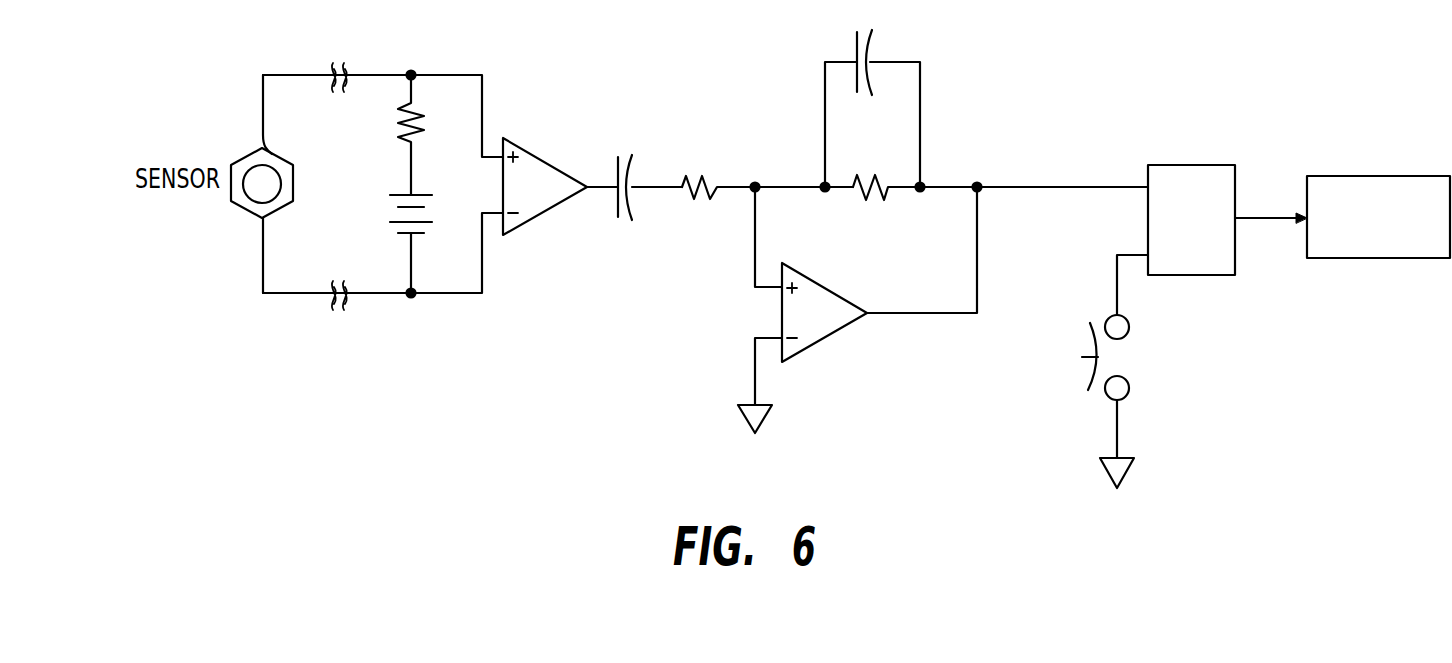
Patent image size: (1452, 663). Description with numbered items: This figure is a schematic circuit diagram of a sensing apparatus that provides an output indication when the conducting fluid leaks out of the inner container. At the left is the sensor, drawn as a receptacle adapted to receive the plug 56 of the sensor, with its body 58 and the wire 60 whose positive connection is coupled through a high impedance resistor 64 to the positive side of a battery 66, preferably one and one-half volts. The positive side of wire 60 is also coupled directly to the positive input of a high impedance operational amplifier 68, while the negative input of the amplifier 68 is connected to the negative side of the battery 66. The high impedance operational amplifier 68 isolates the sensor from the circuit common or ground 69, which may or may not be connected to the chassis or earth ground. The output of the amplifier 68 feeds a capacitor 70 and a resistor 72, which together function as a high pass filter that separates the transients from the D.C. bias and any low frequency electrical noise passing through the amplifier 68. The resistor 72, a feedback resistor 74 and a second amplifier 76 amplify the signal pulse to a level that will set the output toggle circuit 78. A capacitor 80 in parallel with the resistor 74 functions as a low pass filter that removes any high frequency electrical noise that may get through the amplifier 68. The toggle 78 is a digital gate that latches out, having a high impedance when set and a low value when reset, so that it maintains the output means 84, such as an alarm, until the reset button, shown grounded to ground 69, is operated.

The plug 56 is at (238, 151).
The sensor housing 58 is at (248, 213).
The wire 60 is at (281, 186).
The high impedance resistor 64 is at (416, 109).
The battery 66 is at (398, 223).
The high impedance operational amplifier 68 is at (533, 153).
The ground 69 is at (767, 422).
The capacitor 70 is at (623, 153).
The resistor 72 is at (703, 180).
The resistor 74 is at (865, 177).
The amplifier 76 is at (808, 328).
The output toggle circuit 78 is at (1170, 173).
The capacitor 80 is at (870, 72).
The output means 84 is at (1355, 182).